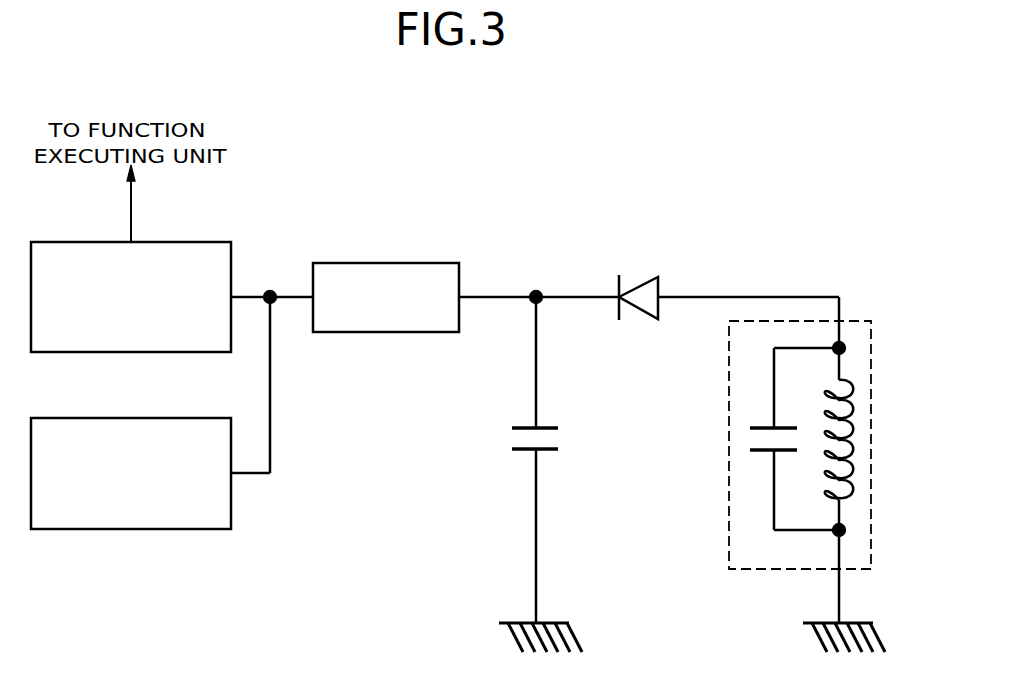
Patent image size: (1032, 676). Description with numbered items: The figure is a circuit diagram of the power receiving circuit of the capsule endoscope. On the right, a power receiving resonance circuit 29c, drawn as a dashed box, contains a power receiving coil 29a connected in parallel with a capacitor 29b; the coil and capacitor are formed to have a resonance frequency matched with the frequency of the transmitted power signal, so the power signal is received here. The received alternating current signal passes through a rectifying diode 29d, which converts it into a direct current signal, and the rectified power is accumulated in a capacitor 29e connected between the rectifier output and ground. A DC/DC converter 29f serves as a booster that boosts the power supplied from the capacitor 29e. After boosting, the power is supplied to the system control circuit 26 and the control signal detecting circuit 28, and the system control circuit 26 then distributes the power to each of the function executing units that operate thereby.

The system control circuit 26 is at (192, 242).
The control signal detecting circuit 28 is at (187, 418).
The power receiving coil 29a is at (850, 427).
The capacitor 29b is at (760, 427).
The power receiving resonance circuit 29c is at (866, 320).
The rectifying diode 29d is at (637, 283).
The capacitor 29e is at (522, 425).
The DC/DC converter 29f is at (417, 263).